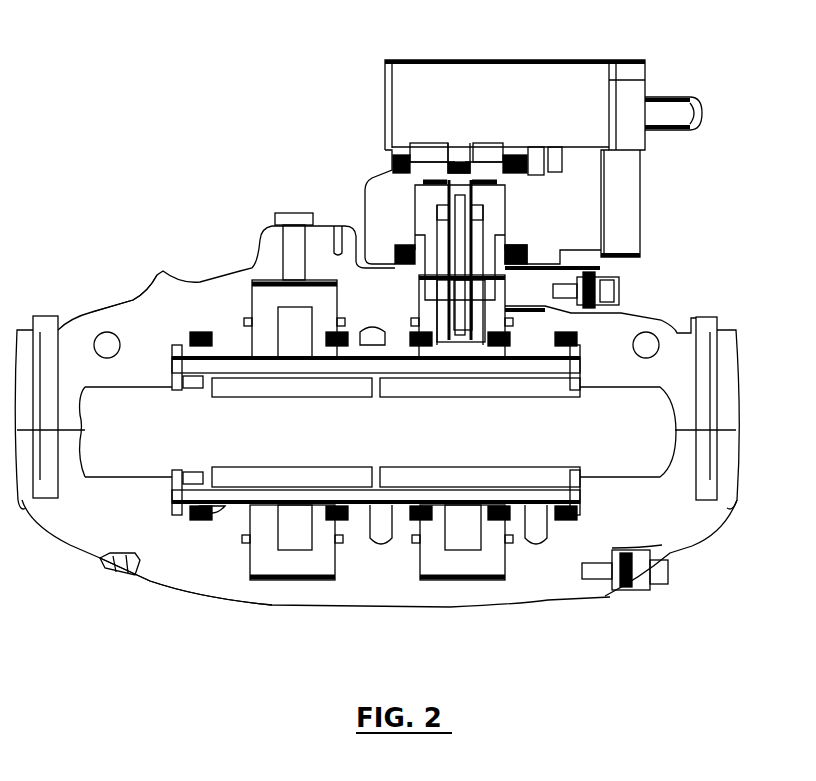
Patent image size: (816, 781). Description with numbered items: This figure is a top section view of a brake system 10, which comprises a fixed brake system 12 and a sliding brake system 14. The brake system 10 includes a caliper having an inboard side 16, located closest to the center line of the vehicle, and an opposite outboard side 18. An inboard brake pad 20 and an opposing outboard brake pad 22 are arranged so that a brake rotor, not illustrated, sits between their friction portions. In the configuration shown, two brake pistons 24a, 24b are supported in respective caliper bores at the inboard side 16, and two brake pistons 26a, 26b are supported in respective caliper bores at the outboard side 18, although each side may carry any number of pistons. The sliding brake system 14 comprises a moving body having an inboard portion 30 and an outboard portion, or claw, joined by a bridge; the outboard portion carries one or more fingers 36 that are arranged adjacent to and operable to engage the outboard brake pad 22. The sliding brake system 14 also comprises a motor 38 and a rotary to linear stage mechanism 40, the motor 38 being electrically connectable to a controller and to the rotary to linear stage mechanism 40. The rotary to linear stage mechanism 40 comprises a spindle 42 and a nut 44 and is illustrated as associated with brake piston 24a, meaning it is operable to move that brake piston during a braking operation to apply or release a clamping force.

The brake system 10 is at (122, 208).
The fixed brake system 12 is at (93, 313).
The sliding brake system 14 is at (682, 69).
The inboard side 16 is at (155, 262).
The outboard side 18 is at (152, 583).
The inboard brake pad 20 is at (248, 382).
The outboard brake pad 22 is at (512, 478).
The brake piston 24a is at (500, 306).
The brake piston 24b is at (270, 300).
The brake piston 26a is at (480, 562).
The brake piston 26b is at (273, 563).
The inboard portion 30 is at (390, 205).
The fingers 36 is at (380, 530).
The motor 38 is at (408, 88).
The rotary to linear stage mechanism 40 is at (496, 244).
The spindle 42 is at (462, 193).
The nut 44 is at (444, 298).